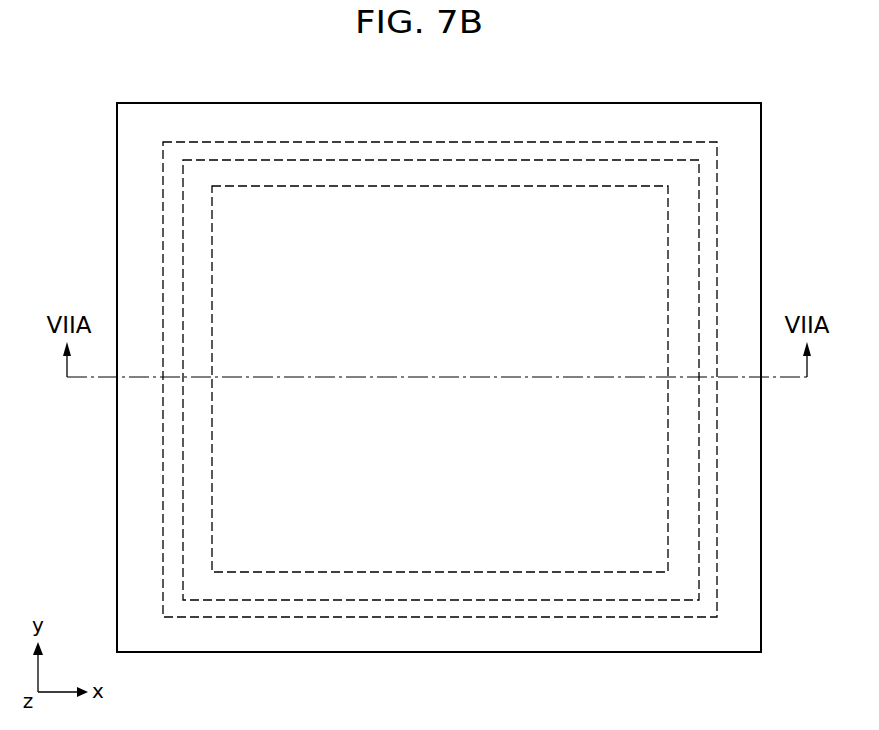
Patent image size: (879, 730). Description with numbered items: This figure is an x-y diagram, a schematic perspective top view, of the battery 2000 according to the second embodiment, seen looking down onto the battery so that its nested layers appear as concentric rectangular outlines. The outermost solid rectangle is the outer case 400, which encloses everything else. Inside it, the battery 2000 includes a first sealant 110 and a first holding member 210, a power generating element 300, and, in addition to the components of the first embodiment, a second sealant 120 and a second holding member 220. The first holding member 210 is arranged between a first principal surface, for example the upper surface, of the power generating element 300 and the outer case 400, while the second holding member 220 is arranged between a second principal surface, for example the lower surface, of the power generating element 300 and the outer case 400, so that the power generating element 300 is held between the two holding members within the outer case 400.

The battery 2000 is at (399, 80).
The outer case 400 is at (118, 478).
The power generating element 300 is at (433, 610).
The first holding member 210 is at (183, 230).
The second holding member 220 is at (583, 573).
The first sealant 110 is at (210, 178).
The second sealant 120 is at (507, 555).